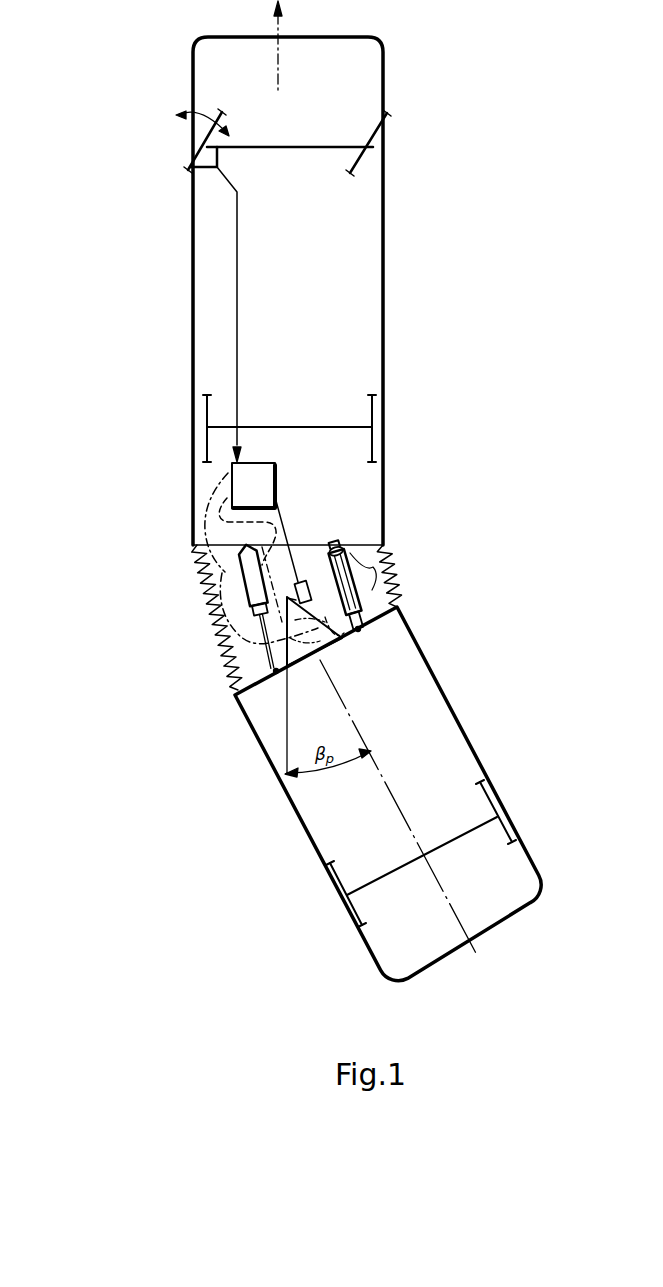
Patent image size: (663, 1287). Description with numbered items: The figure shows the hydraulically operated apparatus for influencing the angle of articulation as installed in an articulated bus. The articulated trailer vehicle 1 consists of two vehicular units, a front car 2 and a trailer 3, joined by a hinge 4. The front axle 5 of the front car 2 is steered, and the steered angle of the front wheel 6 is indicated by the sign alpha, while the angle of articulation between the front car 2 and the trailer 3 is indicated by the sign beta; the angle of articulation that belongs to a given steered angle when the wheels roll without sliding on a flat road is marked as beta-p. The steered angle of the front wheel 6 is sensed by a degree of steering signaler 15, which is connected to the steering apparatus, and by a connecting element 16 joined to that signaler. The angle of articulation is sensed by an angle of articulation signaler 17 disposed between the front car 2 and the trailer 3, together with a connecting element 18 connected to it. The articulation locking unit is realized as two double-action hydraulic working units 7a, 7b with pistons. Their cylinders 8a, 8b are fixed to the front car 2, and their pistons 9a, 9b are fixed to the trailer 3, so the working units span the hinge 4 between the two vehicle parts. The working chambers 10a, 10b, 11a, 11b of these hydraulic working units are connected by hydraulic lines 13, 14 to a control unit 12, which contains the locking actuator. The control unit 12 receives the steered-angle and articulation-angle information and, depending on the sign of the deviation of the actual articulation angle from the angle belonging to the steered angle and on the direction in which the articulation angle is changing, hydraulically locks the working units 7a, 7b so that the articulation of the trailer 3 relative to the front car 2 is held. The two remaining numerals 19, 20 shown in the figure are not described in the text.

The articulated trailer vehicle 1 is at (184, 300).
The front car 2 is at (370, 263).
The trailer 3 is at (466, 781).
The hinge 4 is at (337, 548).
The front axle 5 is at (303, 146).
The front wheel 6 is at (385, 140).
The double-action hydraulic working unit 7a is at (205, 548).
The double-action hydraulic working unit 7b is at (388, 595).
The cylinder 8a is at (244, 588).
The cylinder 8b is at (388, 610).
The piston 9a is at (254, 697).
The piston 9b is at (361, 632).
The working chamber 10a is at (235, 633).
The working chamber 10b is at (349, 553).
The working chamber 11a is at (245, 663).
The working chamber 11b is at (366, 565).
The control unit 12 is at (255, 478).
The hydraulic line 13 is at (210, 497).
The hydraulic line 14 is at (222, 514).
The degree of steering signaler 15 is at (205, 168).
The connecting element 16 is at (237, 253).
The angle of articulation signaler 17 is at (305, 580).
The connecting element 18 is at (283, 497).
The reference line 19 is at (298, 640).
The wedge stop 20 is at (340, 640).